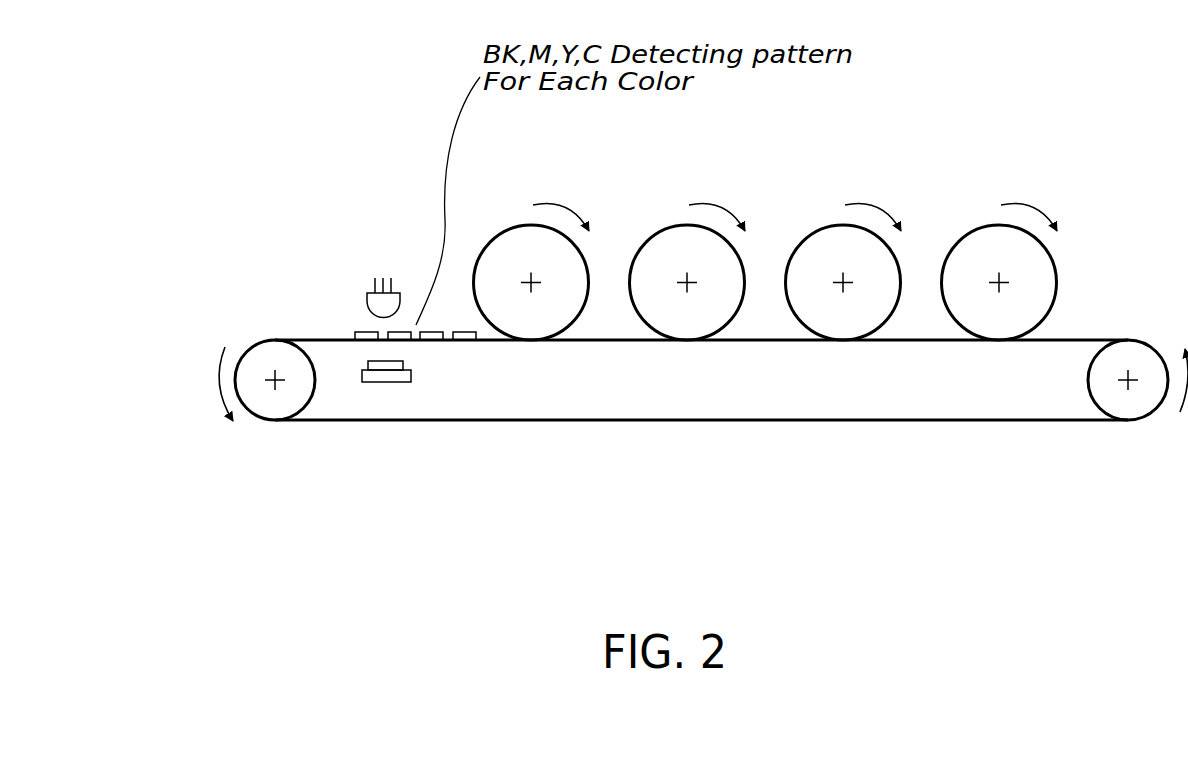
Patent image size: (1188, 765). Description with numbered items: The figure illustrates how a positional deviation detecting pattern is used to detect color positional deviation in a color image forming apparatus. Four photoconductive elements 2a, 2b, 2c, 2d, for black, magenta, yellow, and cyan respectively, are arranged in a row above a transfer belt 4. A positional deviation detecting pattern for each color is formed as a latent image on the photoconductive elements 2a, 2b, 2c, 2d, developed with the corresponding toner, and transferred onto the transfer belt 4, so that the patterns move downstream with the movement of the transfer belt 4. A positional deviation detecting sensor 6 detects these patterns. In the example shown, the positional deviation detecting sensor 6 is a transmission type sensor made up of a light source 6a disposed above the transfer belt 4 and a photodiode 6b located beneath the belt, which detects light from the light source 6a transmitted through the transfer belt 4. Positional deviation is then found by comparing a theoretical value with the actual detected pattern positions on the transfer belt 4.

The photoconductive element 2a is at (980, 236).
The photoconductive element 2b is at (824, 236).
The photoconductive element 2c is at (668, 236).
The photoconductive element 2d is at (512, 236).
The transfer belt 4 is at (1009, 420).
The positional deviation detecting sensor 6 is at (371, 334).
The light source 6a is at (366, 300).
The photodiode 6b is at (385, 383).